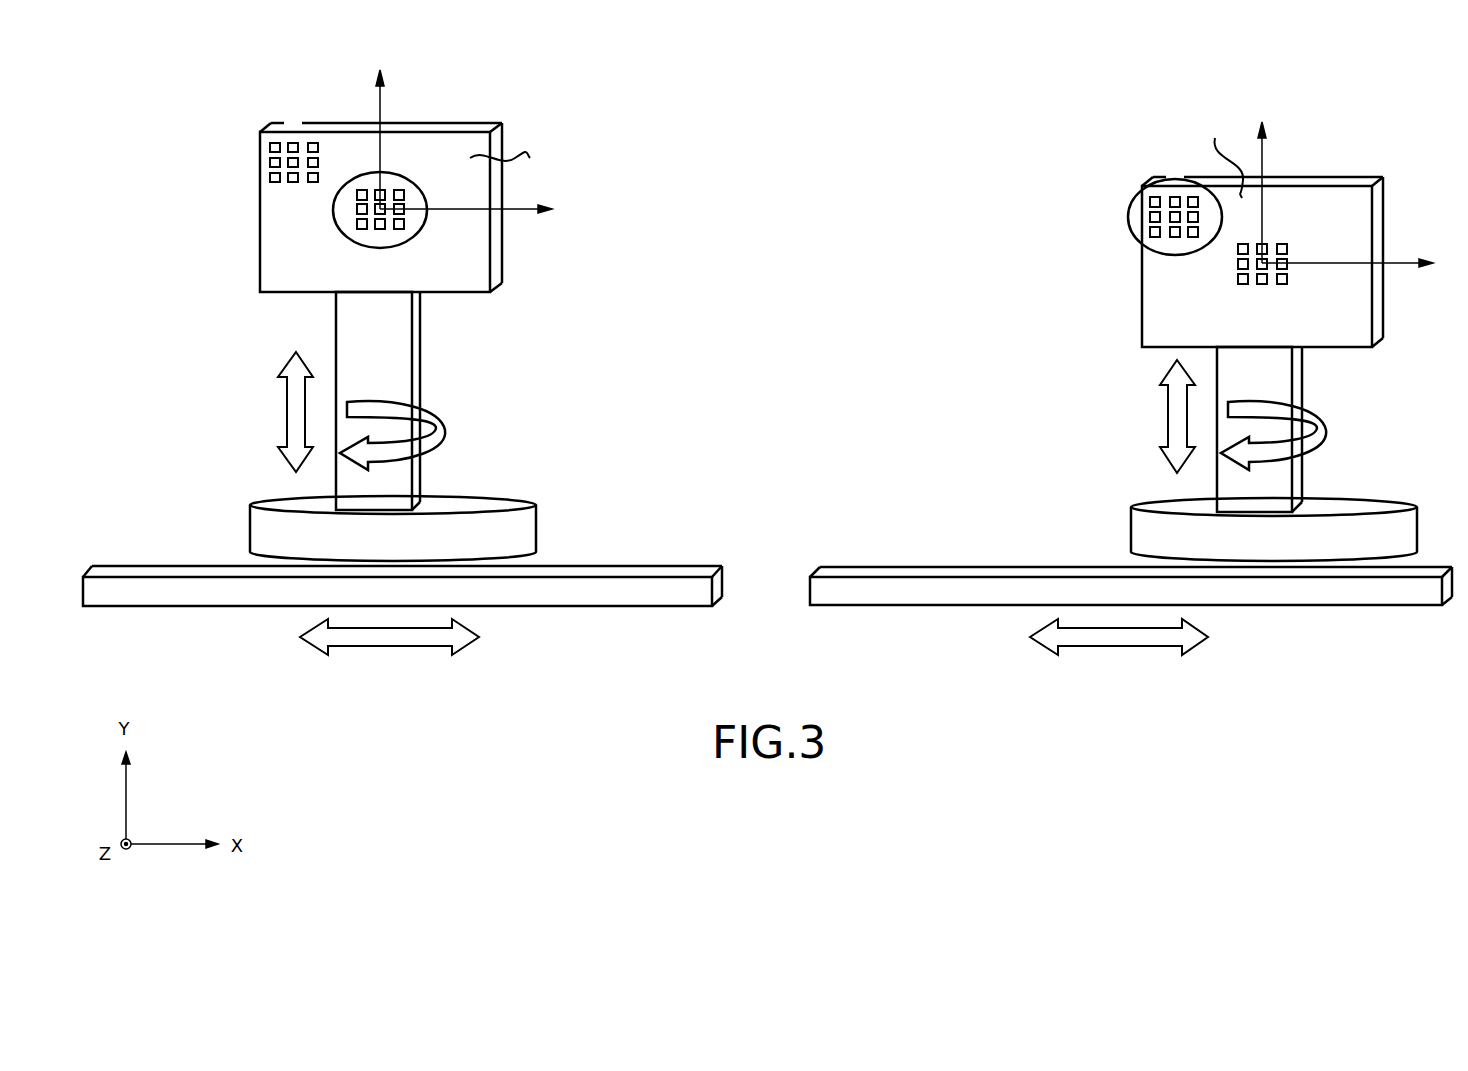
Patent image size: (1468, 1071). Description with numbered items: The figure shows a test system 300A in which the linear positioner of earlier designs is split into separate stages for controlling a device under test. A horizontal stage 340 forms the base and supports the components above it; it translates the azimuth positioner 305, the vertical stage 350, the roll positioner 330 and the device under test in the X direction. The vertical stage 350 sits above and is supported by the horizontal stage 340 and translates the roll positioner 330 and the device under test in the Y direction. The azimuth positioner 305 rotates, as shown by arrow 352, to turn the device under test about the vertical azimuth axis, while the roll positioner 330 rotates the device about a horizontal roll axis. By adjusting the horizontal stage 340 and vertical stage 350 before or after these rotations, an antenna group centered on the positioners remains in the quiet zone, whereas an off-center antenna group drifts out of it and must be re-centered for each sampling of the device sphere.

The system 300A is at (739, 188).
The roll positioner 330 is at (265, 220).
The vertical stage 350 is at (420, 320).
The arrow 352 is at (435, 417).
The azimuth positioner 305 is at (490, 507).
The horizontal stage 340 is at (228, 593).